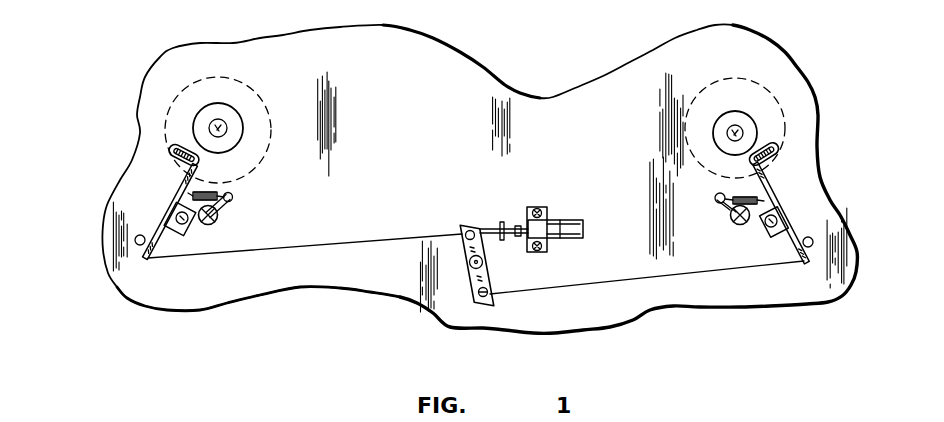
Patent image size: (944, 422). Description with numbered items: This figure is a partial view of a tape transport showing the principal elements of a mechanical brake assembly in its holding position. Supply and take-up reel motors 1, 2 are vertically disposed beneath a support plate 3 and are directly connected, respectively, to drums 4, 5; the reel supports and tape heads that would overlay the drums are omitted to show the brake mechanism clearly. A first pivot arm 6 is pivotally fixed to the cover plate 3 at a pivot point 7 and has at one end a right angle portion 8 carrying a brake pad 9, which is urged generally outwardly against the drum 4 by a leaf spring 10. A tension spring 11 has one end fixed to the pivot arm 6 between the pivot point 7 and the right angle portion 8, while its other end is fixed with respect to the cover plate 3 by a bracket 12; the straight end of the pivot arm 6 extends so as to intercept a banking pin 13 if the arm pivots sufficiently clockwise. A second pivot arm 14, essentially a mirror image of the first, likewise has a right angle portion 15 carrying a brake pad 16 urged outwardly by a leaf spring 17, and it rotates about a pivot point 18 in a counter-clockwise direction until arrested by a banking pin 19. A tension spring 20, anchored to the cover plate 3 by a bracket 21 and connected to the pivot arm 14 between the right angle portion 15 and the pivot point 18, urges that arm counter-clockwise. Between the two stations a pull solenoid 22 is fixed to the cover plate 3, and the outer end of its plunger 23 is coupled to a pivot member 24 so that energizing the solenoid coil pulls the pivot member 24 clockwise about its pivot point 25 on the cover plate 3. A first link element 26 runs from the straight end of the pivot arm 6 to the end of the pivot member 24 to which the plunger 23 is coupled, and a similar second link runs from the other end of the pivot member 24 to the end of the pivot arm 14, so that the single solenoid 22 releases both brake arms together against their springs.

The supply reel motor 1 is at (212, 77).
The take-up reel motor 2 is at (768, 88).
The support plate 3 is at (336, 48).
The drum 4 is at (254, 137).
The drum 5 is at (716, 114).
The first pivot arm 6 is at (190, 196).
The pivot point 7 is at (176, 218).
The right angle portion 8 is at (177, 163).
The brake pad 9 is at (181, 142).
The leaf spring 10 is at (203, 158).
The tension spring 11 is at (213, 186).
The bracket 12 is at (222, 211).
The banking pin 13 is at (136, 243).
The second pivot arm 14 is at (768, 187).
The right angle portion 15 is at (776, 158).
The brake pad 16 is at (762, 140).
The leaf spring 17 is at (750, 160).
The pivot point 18 is at (763, 233).
The banking pin 19 is at (814, 240).
The tension spring 20 is at (716, 197).
The bracket 21 is at (727, 212).
The pull solenoid 22 is at (560, 219).
The plunger 23 is at (513, 224).
The pivot member 24 is at (468, 262).
The pivot point 25 is at (483, 263).
The first link element 26 is at (298, 247).